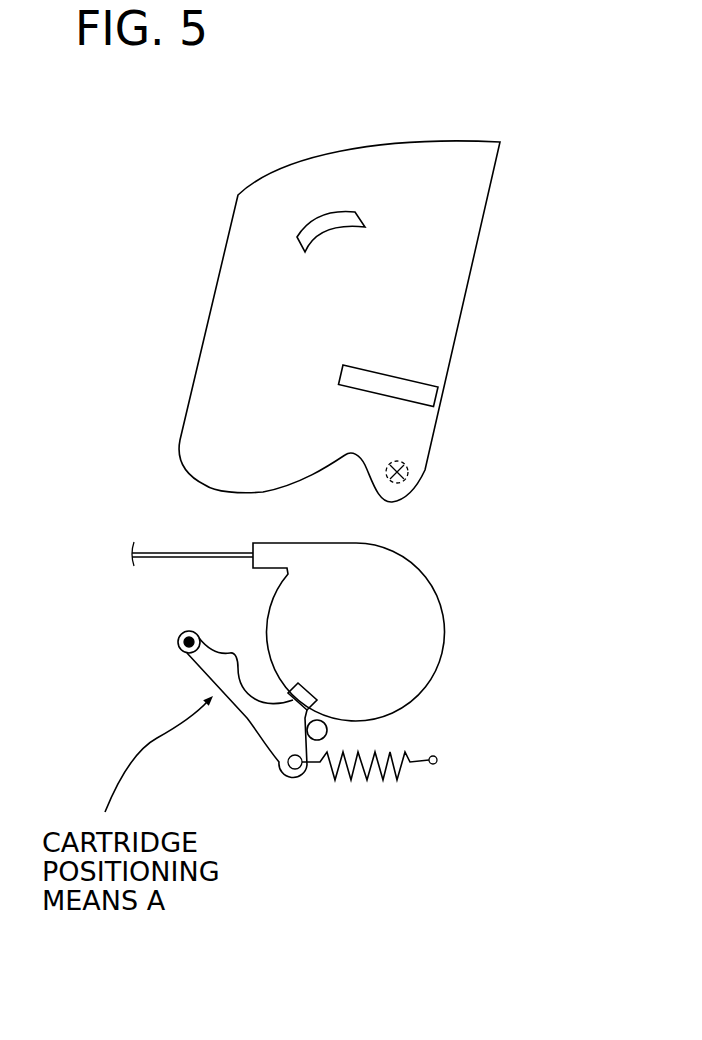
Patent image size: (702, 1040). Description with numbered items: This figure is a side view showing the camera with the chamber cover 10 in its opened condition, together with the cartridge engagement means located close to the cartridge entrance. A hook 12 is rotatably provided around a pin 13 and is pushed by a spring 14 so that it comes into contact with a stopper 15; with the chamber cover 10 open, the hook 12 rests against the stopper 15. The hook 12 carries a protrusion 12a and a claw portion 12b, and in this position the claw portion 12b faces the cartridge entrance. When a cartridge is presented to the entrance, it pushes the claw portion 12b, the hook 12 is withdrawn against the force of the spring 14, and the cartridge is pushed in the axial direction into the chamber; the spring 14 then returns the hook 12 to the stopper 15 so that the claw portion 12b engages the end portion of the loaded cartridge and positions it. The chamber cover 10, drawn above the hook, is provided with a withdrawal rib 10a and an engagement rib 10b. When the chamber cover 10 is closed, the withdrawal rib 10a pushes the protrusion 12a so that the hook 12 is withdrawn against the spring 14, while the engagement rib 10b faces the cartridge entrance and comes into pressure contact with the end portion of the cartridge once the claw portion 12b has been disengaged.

The chamber cover 10 is at (430, 313).
The withdrawal rib 10a is at (313, 222).
The engagement rib 10b is at (362, 365).
The hook 12 is at (233, 705).
The protrusion 12a is at (237, 655).
The claw portion 12b is at (306, 683).
The pin 13 is at (185, 648).
The spring 14 is at (373, 770).
The stopper 15 is at (330, 730).